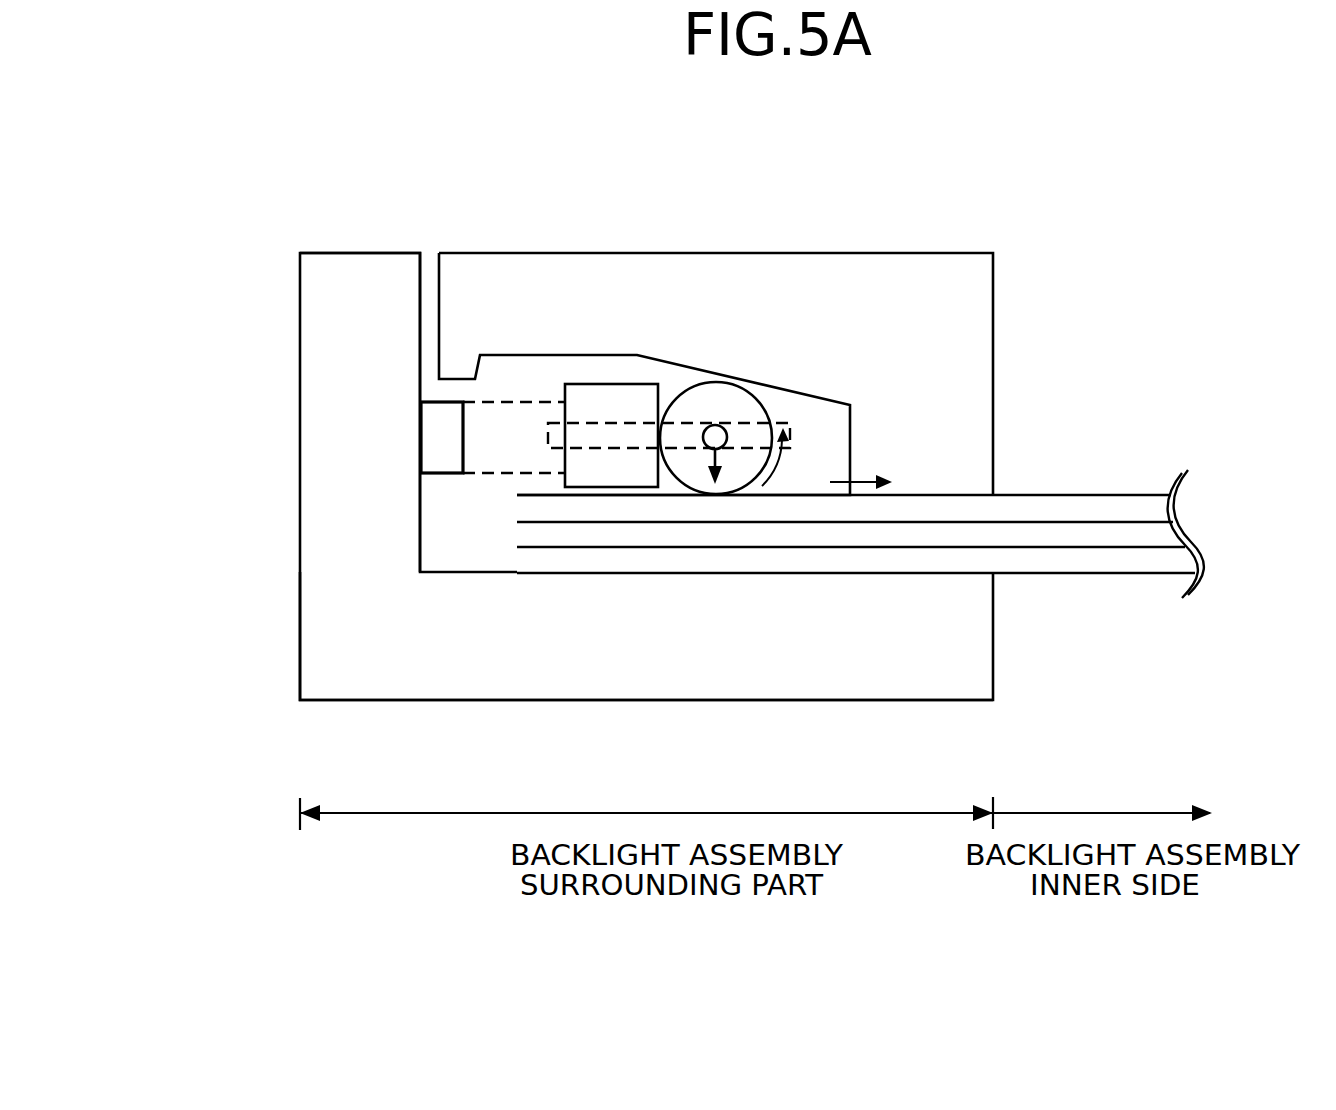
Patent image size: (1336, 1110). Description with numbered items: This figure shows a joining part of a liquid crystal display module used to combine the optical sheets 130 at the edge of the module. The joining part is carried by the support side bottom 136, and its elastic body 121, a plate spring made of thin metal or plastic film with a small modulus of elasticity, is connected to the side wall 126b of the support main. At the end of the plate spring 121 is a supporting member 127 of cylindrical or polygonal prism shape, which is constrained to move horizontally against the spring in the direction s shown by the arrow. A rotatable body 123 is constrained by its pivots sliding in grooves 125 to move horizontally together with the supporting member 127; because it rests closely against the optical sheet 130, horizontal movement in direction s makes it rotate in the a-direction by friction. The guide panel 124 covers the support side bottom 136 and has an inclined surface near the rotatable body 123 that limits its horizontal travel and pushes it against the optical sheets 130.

The elastic body 121 is at (500, 400).
The rotatable body 123 is at (717, 393).
The guide panel 124 is at (979, 300).
The groove 125 is at (600, 430).
The side wall 126b is at (355, 347).
The supporting member 127 is at (637, 405).
The optical sheet 130 is at (1113, 565).
The support side bottom 136 is at (629, 687).